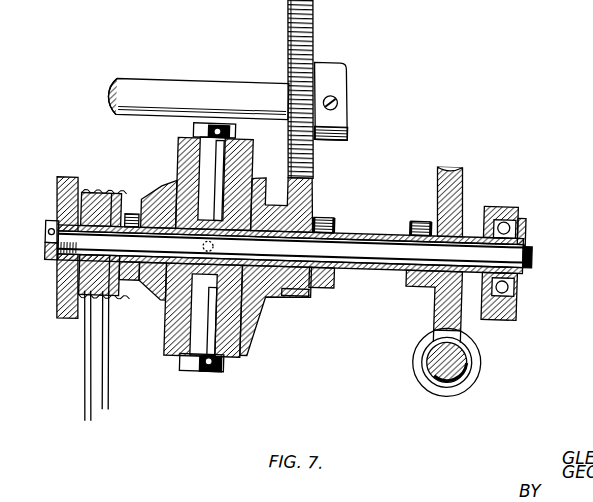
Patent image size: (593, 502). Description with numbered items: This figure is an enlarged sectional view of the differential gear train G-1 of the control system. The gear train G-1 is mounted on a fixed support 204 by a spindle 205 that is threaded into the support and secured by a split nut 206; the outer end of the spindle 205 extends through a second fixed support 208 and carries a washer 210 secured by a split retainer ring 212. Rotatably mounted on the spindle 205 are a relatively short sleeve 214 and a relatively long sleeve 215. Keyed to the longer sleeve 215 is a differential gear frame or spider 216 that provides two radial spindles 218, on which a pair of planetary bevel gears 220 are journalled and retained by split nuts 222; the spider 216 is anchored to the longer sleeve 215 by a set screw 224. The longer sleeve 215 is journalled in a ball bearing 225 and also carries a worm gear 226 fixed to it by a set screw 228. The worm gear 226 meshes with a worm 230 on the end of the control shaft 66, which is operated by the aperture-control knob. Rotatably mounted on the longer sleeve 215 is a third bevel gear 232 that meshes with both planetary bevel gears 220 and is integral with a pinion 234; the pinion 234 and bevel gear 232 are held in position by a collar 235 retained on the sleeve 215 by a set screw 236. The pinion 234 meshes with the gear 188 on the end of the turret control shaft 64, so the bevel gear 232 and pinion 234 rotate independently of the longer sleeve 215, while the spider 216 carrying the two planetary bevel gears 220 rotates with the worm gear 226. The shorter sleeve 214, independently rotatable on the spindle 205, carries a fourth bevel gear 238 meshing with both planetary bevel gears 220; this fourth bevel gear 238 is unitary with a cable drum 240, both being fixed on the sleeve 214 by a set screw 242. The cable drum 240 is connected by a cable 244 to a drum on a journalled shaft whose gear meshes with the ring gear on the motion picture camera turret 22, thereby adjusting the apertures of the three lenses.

The turret control shaft 64 is at (207, 93).
The gear 188 is at (316, 21).
The fixed support 204 is at (63, 197).
The split nut 206 is at (52, 235).
The set screw 242 is at (128, 219).
The short sleeve 214 is at (136, 291).
The fourth bevel gear 238 is at (158, 204).
The planetary bevel gears 220 is at (233, 165).
The radial spindles 218 is at (208, 156).
The split nuts 222 is at (232, 135).
The differential gear frame or spider 216 is at (242, 306).
The third bevel gear 232 is at (272, 296).
The pinion 234 is at (310, 296).
The collar 235 is at (335, 282).
The set screw 236 is at (322, 216).
The set screw 228 is at (418, 218).
The worm gear 226 is at (460, 183).
The long sleeve 215 is at (398, 269).
The worm 230 is at (477, 357).
The control shaft 66 is at (440, 359).
The second fixed support 208 is at (506, 201).
The ball bearing 225 is at (516, 218).
The washer 210 is at (524, 220).
The spindle 205 is at (368, 246).
The set screw 224 is at (215, 248).
The split retainer ring 212 is at (526, 240).
The cable drum 240 is at (75, 298).
The cable 244 is at (108, 395).
The differential gear train G-1 is at (284, 338).
The motion picture camera turret 22 is at (511, 9).